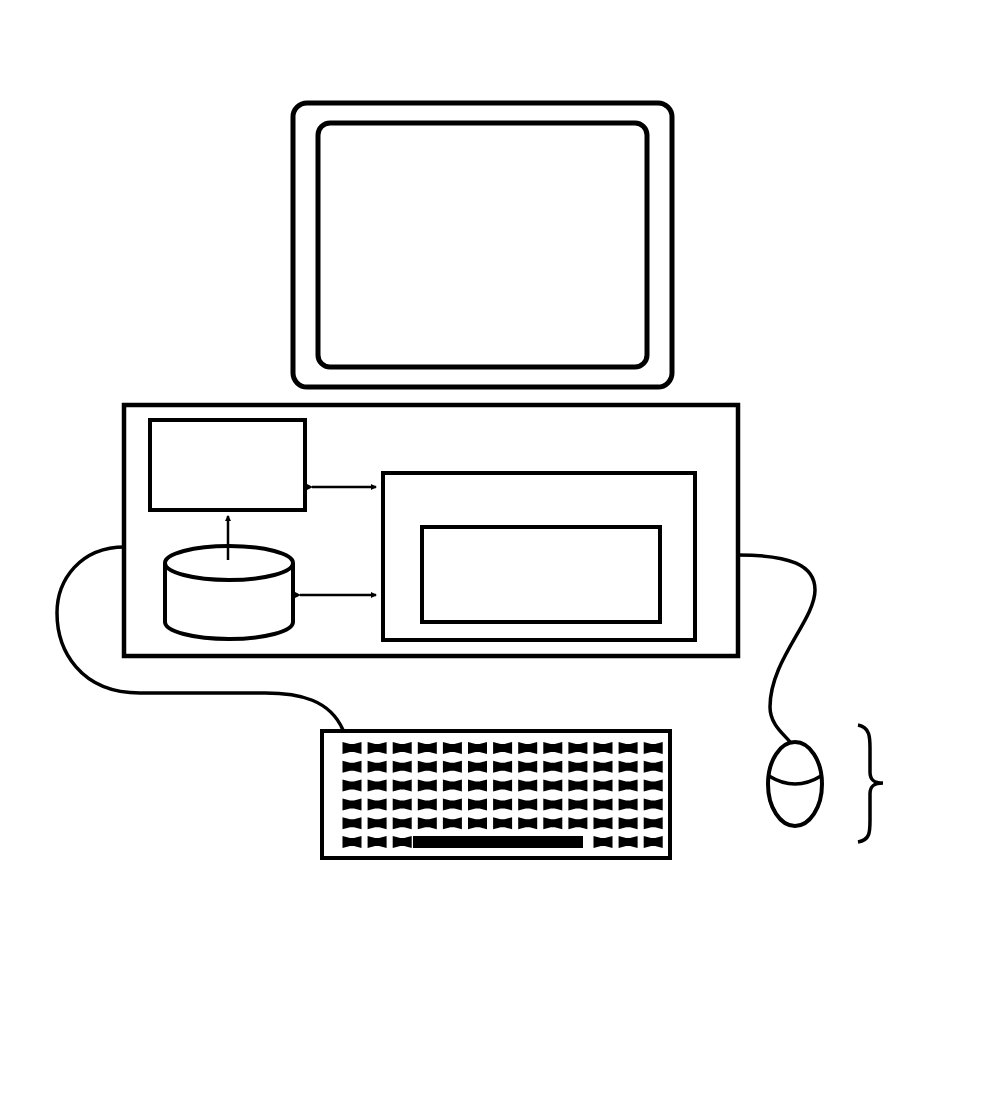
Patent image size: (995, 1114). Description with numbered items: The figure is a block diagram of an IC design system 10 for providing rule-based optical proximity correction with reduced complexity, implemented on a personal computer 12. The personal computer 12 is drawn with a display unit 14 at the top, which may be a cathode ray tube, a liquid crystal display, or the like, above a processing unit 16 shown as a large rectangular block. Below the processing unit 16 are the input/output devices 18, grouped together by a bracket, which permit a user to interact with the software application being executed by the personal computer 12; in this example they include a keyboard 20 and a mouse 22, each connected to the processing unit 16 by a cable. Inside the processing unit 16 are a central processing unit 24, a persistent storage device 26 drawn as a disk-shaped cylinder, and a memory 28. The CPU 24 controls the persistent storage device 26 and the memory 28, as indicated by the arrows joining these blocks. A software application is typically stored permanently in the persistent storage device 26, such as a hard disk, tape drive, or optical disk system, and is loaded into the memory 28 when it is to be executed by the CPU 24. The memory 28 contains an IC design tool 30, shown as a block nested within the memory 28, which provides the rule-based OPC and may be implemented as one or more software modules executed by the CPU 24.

The IC design system 10 is at (727, 70).
The personal computer 12 is at (673, 200).
The display unit 14 is at (295, 203).
The processing unit 16 is at (710, 459).
The input/output devices 18 is at (579, 783).
The keyboard 20 is at (322, 796).
The mouse 22 is at (772, 760).
The central processing unit 24 is at (245, 461).
The persistent storage device 26 is at (255, 621).
The memory 28 is at (572, 518).
The IC design tool 30 is at (572, 569).